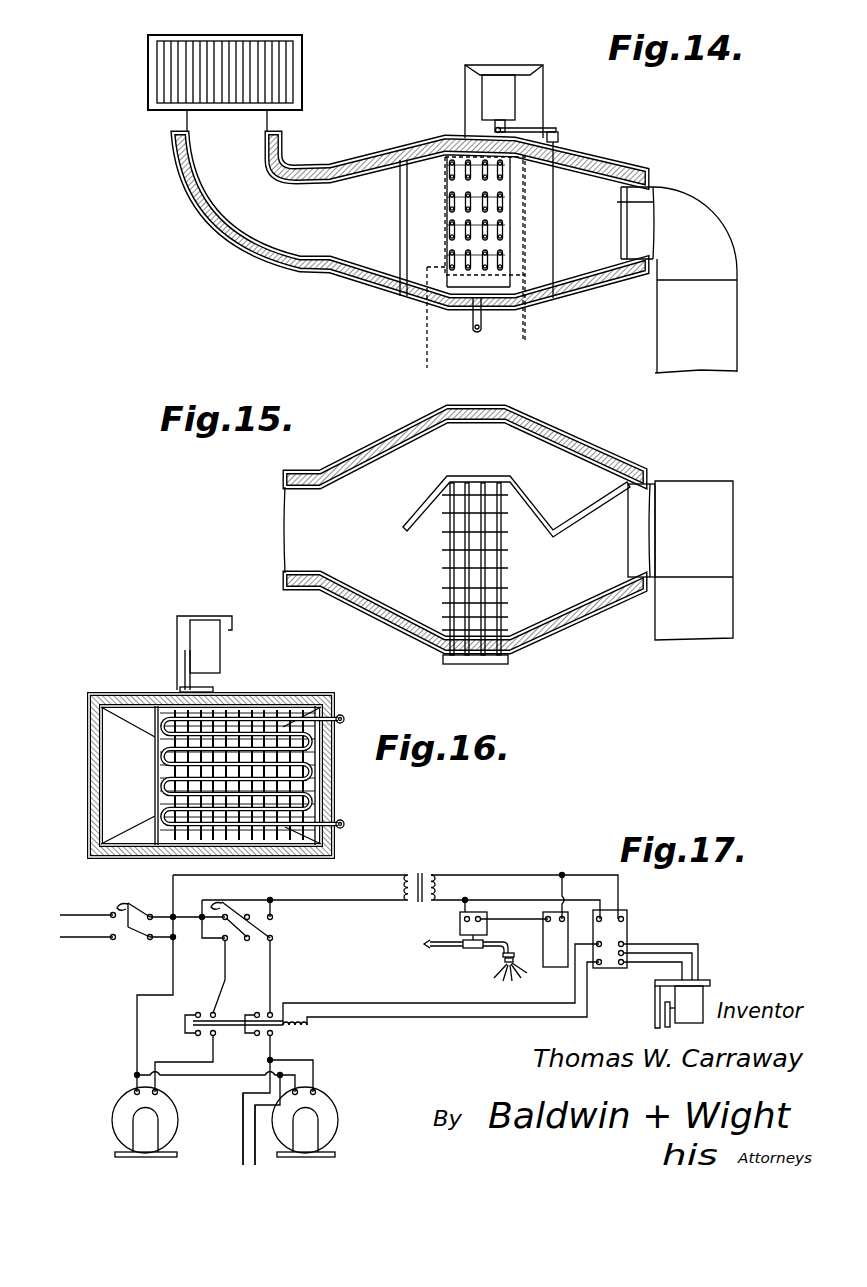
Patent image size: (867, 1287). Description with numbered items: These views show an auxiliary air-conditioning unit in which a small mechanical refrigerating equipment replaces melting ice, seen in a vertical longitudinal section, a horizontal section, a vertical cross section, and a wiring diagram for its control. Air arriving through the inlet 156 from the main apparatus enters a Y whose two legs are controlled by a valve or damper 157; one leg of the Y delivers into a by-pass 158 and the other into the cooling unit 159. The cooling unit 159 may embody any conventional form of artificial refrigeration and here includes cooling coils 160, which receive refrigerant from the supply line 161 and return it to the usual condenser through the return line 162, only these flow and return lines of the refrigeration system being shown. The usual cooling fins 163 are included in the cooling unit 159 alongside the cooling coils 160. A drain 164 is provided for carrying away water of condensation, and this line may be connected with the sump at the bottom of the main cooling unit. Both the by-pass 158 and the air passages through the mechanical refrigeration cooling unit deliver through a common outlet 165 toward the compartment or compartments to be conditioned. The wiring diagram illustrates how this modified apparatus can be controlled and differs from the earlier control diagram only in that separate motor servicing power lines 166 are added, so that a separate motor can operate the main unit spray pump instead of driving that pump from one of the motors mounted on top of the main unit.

In FIG. 14, the inlet 156 is at (698, 212).
In FIG. 15, the inlet 156 is at (694, 560).
In FIG. 14, the valve or damper 157 is at (620, 203).
In FIG. 15, the valve or damper 157 is at (589, 512).
In FIG. 15, the by-pass 158 is at (390, 466).
In FIG. 14, the cooling unit 159 is at (435, 218).
In FIG. 15, the cooling unit 159 is at (435, 581).
In FIG. 16, the cooling unit 159 is at (316, 793).
In FIG. 14, the cooling coils 160 is at (447, 257).
In FIG. 15, the cooling coils 160 is at (483, 583).
In FIG. 16, the cooling coils 160 is at (170, 810).
In FIG. 14, the supply line 161 is at (528, 328).
In FIG. 16, the supply line 161 is at (344, 719).
In FIG. 14, the return line 162 is at (416, 330).
In FIG. 16, the return line 162 is at (344, 824).
In FIG. 14, the cooling fins 163 is at (440, 190).
In FIG. 15, the cooling fins 163 is at (443, 538).
In FIG. 16, the cooling fins 163 is at (196, 845).
In FIG. 14, the drain 164 is at (478, 327).
In FIG. 14, the common outlet 165 is at (220, 203).
In FIG. 15, the common outlet 165 is at (312, 522).
In FIG. 17, the motor servicing power lines 166 is at (243, 1122).